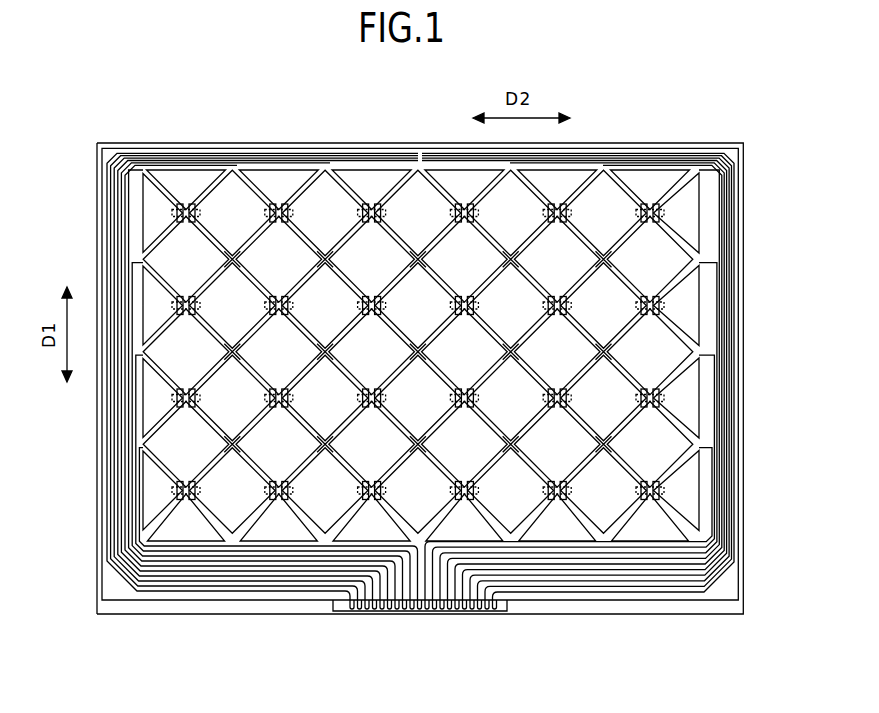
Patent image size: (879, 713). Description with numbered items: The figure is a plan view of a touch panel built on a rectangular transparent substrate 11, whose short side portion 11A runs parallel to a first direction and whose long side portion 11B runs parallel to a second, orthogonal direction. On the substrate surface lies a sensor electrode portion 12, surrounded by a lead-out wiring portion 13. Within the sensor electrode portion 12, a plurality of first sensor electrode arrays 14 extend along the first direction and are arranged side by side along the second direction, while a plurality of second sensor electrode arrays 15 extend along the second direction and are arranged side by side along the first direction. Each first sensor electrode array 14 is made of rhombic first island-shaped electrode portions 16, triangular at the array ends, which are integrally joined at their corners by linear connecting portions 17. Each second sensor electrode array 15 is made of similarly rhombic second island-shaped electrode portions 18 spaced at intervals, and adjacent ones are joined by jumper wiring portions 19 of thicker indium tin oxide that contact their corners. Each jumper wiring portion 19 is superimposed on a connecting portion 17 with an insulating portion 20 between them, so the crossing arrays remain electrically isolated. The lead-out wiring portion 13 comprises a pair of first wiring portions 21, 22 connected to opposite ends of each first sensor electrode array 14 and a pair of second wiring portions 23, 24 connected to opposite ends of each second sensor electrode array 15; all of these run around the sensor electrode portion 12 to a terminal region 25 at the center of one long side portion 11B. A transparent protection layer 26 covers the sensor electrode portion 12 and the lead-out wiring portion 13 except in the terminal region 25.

The transparent substrate 11 is at (152, 143).
The short side portion 11A is at (101, 214).
The long side portion 11B is at (190, 148).
The sensor electrode portion 12 is at (418, 150).
The lead-out wiring portion 13 is at (110, 159).
The first sensor electrode array 14 is at (560, 545).
The second sensor electrode array 15 is at (703, 397).
The first island-shaped electrode portion 16 is at (568, 455).
The connecting portion 17 is at (700, 360).
The second island-shaped electrode portion 18 is at (603, 418).
The jumper wiring portion 19 is at (570, 399).
The insulating portion 20 is at (573, 408).
The first wiring portion 21 is at (509, 543).
The first wiring portion 22 is at (616, 155).
The second wiring portion 23 is at (139, 462).
The second wiring portion 24 is at (703, 456).
The terminal region 25 is at (492, 626).
The transparent protection layer 26 is at (263, 153).